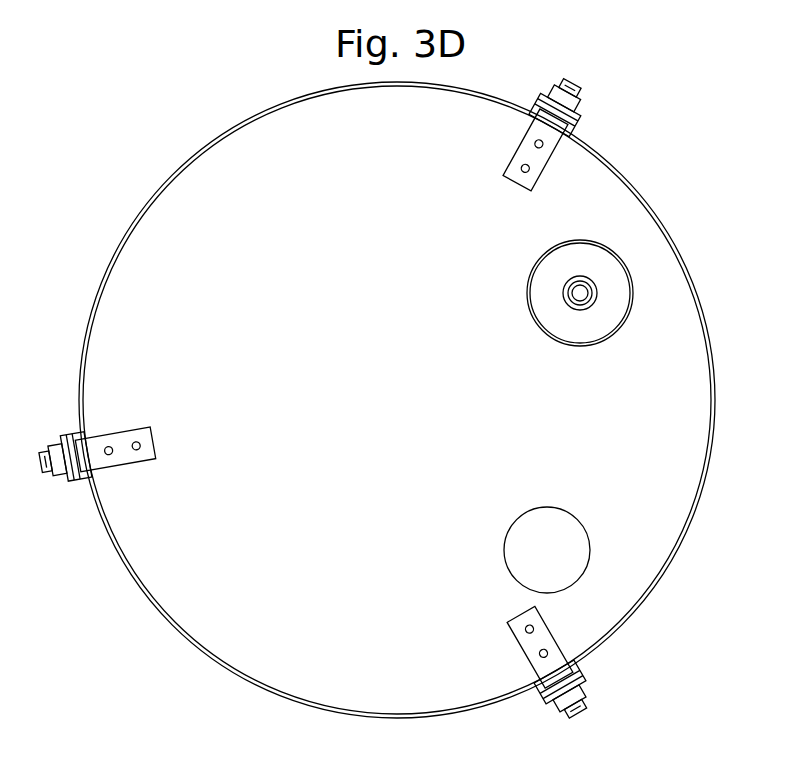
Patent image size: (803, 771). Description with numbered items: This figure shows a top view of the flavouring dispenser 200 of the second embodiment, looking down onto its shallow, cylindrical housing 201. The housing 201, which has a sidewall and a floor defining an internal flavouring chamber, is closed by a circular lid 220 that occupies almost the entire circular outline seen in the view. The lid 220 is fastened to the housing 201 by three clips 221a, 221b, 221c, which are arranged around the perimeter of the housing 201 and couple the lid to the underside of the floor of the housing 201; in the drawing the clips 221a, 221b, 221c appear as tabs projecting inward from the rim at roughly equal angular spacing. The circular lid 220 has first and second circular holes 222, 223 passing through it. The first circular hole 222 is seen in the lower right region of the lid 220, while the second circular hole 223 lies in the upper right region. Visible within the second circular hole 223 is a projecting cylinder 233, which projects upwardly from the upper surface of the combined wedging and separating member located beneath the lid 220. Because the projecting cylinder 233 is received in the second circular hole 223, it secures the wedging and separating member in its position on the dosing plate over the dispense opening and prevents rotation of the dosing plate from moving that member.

The flavouring dispenser 200 is at (138, 635).
The housing 201 is at (192, 154).
The circular lid 220 is at (183, 204).
The clip 221a is at (596, 698).
The clip 221b is at (52, 478).
The clip 221c is at (593, 93).
The first circular hole 222 is at (578, 562).
The second circular hole 223 is at (628, 310).
The projecting cylinder 233 is at (612, 270).